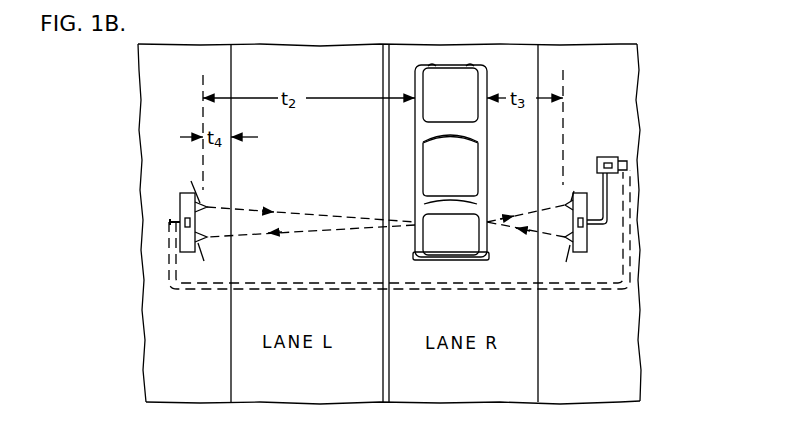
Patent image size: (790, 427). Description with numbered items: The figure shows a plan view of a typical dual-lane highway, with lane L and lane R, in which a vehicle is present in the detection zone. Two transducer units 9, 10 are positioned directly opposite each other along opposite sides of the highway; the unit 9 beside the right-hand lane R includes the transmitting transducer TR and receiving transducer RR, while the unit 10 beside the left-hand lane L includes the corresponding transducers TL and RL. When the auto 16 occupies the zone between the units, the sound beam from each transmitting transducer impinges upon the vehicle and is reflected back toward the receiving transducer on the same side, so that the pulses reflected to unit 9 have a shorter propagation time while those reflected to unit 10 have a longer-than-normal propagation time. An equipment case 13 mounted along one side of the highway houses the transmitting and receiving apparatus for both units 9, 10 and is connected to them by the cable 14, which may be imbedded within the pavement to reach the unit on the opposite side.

The transducer unit 9 is at (587, 240).
The transducer unit 10 is at (180, 207).
The equipment case 13 is at (608, 157).
The cable 14 is at (607, 191).
The auto 16 is at (487, 145).